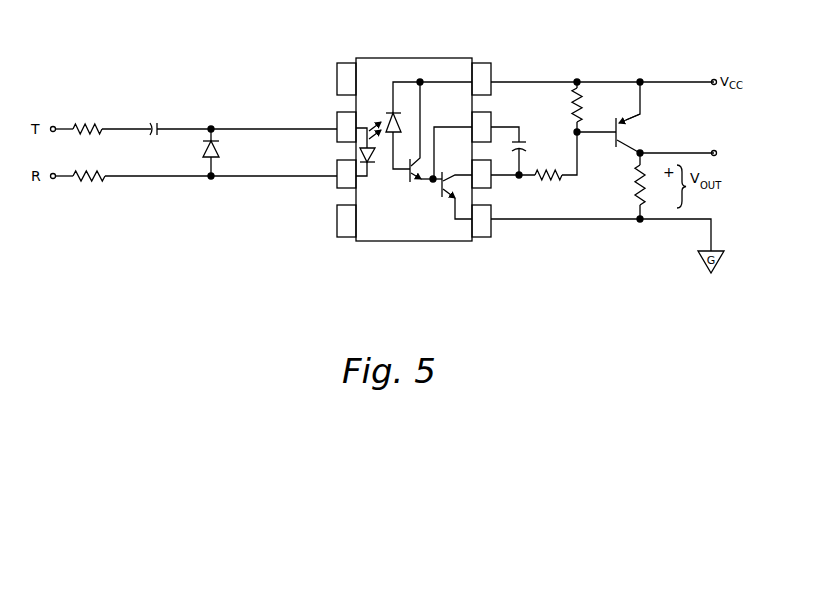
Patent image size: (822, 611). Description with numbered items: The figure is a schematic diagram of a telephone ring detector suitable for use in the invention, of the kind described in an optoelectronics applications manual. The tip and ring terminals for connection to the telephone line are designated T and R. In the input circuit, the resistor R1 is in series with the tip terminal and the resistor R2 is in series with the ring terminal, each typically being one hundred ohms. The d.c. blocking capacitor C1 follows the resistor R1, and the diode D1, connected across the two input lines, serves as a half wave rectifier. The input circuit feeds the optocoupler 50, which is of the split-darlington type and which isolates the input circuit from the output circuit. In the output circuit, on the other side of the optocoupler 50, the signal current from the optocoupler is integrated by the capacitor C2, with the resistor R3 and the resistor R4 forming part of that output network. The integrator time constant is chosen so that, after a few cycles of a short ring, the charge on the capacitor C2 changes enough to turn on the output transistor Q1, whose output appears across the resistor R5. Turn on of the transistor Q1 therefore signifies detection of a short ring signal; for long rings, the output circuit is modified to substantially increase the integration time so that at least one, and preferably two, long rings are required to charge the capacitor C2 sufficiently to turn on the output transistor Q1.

The resistor R1 is at (100, 126).
The d.c. blocking capacitor C1 is at (158, 127).
The diode D1 is at (222, 153).
The resistor R2 is at (98, 181).
The optocoupler 50 is at (456, 58).
The resistor R4 is at (574, 105).
The output transistor Q1 is at (617, 122).
The capacitor C2 is at (524, 151).
The resistor R3 is at (535, 178).
The resistor R5 is at (636, 183).